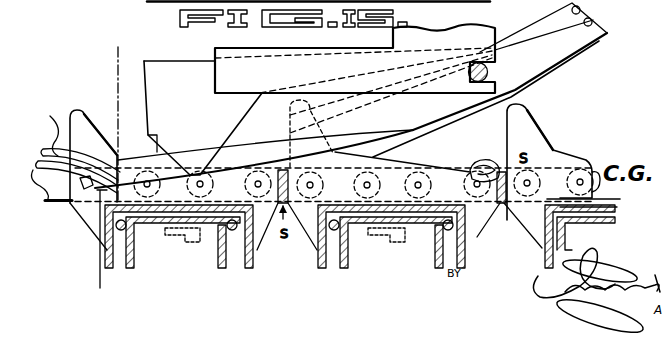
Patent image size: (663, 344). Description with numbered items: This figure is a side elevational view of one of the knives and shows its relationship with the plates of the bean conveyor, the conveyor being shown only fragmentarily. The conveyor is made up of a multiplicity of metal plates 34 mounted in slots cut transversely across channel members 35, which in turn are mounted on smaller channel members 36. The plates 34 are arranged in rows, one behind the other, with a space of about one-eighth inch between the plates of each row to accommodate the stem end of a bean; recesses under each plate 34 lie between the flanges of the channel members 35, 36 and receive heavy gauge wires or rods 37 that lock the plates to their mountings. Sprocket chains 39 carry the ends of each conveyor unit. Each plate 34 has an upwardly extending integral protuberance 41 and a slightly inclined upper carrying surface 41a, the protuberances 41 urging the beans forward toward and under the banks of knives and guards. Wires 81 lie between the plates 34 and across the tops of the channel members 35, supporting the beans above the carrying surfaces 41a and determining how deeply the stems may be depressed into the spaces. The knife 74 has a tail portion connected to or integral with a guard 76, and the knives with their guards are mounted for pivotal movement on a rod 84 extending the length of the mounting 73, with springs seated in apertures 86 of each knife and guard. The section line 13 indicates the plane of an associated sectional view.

The section line 13- 13 is at (132, 47).
The mounting 73 is at (222, 46).
The rod 84 is at (496, 70).
The apertures 86 is at (590, 3).
The knife 74 is at (203, 118).
The guard 76 is at (42, 150).
The wires 81 is at (45, 153).
The protuberances 41 is at (83, 112).
The upper carrying surfaces 41a is at (486, 140).
The sprocket chains 39 is at (471, 180).
The channel members 35 is at (105, 255).
The channel members 36 is at (140, 262).
The wires or rods 37 is at (100, 234).
The metal plates 34 is at (72, 215).